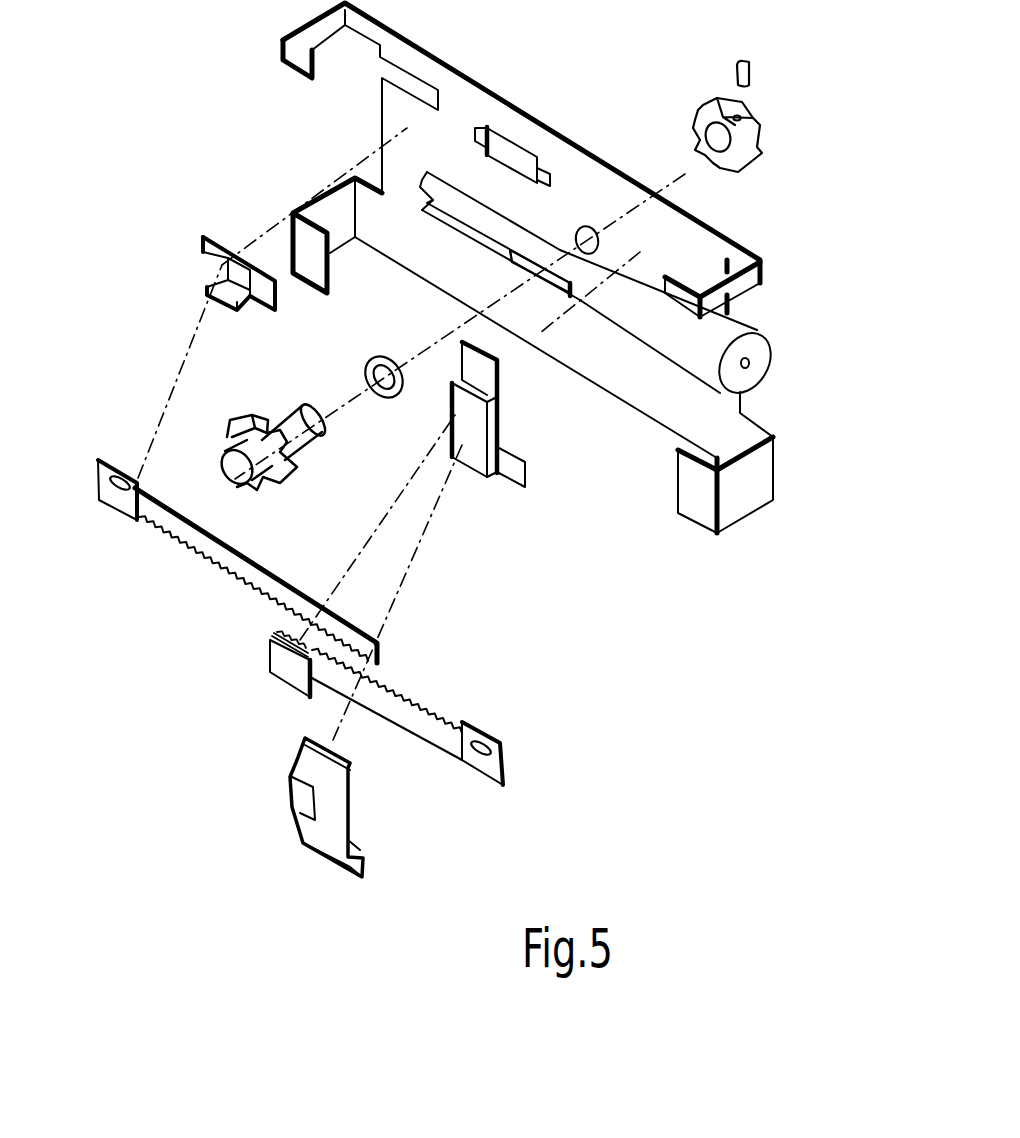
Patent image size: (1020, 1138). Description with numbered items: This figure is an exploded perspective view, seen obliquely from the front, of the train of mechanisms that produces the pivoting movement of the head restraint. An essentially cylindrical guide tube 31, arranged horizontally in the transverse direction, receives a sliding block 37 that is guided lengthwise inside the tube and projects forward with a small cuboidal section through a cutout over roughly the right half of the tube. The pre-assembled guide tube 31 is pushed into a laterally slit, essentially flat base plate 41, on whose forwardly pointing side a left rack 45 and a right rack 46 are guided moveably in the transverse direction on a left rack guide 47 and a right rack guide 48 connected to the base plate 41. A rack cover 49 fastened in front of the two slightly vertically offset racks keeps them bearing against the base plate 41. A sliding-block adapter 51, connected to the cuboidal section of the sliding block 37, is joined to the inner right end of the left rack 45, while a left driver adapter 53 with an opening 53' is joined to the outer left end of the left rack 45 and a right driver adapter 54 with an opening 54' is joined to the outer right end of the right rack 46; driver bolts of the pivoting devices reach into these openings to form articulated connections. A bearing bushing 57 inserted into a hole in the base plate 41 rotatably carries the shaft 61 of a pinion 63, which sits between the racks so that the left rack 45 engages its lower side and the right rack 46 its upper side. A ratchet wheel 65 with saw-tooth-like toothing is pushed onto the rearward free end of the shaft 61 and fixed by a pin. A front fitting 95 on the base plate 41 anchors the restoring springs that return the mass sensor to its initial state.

The base plate 41 is at (578, 172).
The front fitting 95 is at (507, 147).
The ratchet wheel 65 is at (755, 132).
The guide tube 31 is at (752, 350).
The sliding block 37 is at (568, 295).
The right rack guide 48 is at (230, 255).
The bearing bushing 57 is at (378, 362).
The shaft 61 is at (295, 418).
The pinion 63 is at (252, 425).
The left rack guide 47 is at (472, 453).
The right driver adapter 54 is at (108, 482).
The opening 54' is at (118, 427).
The right rack 46 is at (205, 556).
The sliding-block adapter 51 is at (283, 668).
The left rack 45 is at (417, 725).
The left driver adapter 53 is at (552, 735).
The opening 53' is at (556, 715).
The rack cover 49 is at (343, 823).